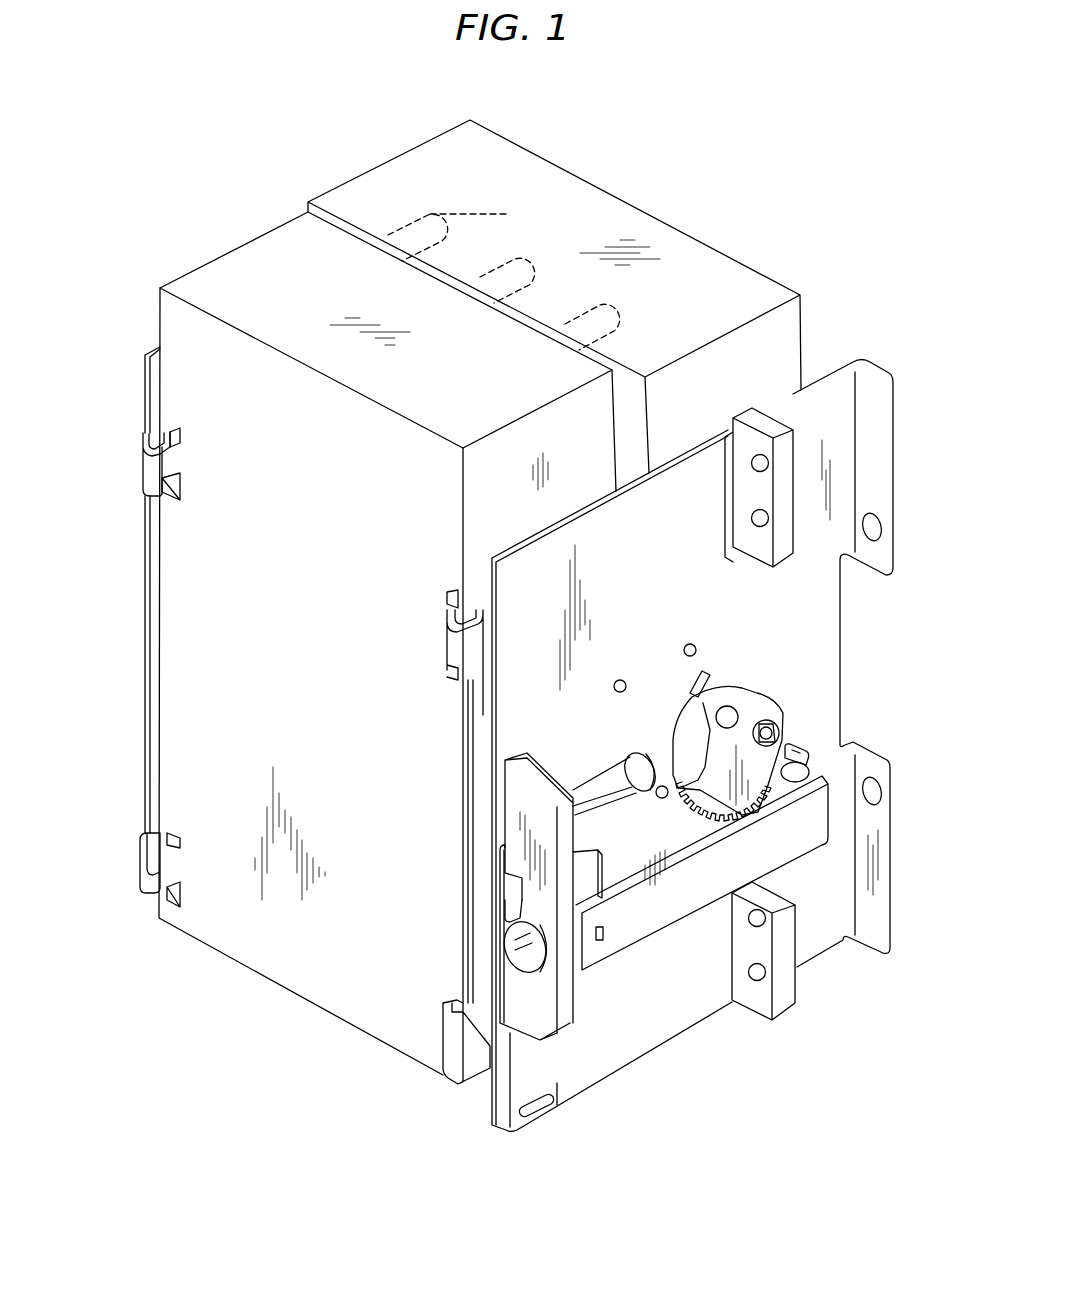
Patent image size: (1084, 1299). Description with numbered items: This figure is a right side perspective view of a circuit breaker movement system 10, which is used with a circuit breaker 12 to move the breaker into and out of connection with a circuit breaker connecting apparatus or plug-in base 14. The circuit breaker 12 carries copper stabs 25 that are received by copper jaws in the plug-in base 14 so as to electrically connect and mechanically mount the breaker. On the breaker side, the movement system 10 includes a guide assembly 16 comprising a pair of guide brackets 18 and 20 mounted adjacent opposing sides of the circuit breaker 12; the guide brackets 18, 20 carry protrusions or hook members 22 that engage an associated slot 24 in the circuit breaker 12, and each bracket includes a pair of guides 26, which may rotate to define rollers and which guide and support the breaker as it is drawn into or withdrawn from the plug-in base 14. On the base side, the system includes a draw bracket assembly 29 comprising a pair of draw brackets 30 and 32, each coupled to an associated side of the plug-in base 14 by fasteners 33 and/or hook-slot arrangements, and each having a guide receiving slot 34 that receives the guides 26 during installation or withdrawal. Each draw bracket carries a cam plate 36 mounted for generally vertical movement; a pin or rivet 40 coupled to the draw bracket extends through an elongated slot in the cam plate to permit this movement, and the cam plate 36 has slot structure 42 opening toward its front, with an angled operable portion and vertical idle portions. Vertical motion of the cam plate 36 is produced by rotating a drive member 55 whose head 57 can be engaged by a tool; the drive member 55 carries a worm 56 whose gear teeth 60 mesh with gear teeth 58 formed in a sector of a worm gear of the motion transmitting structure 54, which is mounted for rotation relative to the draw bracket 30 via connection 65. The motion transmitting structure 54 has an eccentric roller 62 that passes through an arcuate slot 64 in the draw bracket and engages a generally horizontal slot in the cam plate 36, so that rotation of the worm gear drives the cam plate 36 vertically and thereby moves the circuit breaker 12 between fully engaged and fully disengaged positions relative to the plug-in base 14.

The circuit breaker movement system 10 is at (806, 180).
The circuit breaker 12 is at (315, 691).
The plug-in base 14 is at (695, 263).
The guide assembly 16 is at (477, 603).
The guide bracket 18 is at (485, 848).
The guide bracket 20 is at (158, 658).
The hook members 22 is at (175, 458).
The slot 24 is at (170, 433).
The copper stabs 25 is at (516, 257).
The guides 26 is at (643, 760).
The draw bracket assembly 29 is at (895, 427).
The draw bracket 30 is at (835, 622).
The draw bracket 32 is at (143, 378).
The fasteners 33 is at (755, 510).
The guide receiving slot 34 is at (600, 803).
The cam plate 36 is at (580, 793).
The pin or rivet 40 is at (690, 643).
The slot structure 42 is at (597, 807).
The motion transmitting structure 54 is at (760, 697).
The drive member 55 is at (640, 880).
The worm 56 is at (780, 803).
The head 57 is at (583, 930).
The gear teeth 58 is at (697, 815).
The gear teeth 60 is at (807, 777).
The eccentric roller 62 is at (688, 698).
The arcuate slot 64 is at (710, 672).
The connection 65 is at (783, 730).